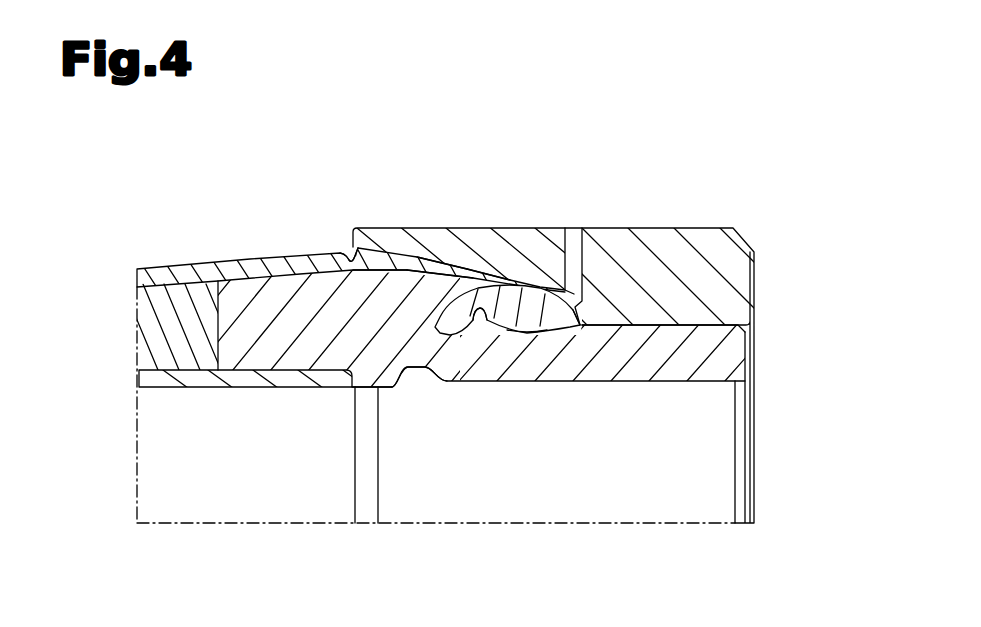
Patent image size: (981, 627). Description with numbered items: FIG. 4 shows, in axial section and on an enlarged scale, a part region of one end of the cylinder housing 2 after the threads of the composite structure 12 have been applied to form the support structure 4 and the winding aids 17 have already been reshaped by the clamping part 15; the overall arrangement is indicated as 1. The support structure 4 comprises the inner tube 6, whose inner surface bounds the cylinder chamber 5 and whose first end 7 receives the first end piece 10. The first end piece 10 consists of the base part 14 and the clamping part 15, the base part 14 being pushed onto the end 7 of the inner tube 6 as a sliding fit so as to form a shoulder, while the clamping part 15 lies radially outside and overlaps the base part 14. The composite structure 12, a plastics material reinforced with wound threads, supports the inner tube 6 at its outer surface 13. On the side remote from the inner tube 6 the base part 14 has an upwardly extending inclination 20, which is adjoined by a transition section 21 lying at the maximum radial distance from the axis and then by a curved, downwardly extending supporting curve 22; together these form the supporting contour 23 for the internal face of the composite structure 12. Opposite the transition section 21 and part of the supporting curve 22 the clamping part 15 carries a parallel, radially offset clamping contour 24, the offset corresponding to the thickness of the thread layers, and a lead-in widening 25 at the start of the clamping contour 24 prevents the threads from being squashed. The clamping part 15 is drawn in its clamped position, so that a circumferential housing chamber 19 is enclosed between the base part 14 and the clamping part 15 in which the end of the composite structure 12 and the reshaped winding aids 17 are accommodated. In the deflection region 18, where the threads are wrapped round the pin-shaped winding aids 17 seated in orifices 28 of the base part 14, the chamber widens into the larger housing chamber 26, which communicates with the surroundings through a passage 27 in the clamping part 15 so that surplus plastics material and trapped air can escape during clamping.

The bearing arrangement 1 is at (722, 101).
The cylinder housing 2 is at (300, 185).
The support structure 4 is at (453, 446).
The cylinder chamber 5 is at (190, 475).
The inner tube 6 is at (150, 382).
The first end 7 is at (338, 381).
The first end piece 10 is at (745, 202).
The composite structure 12 is at (168, 277).
The outer surface 13 is at (179, 365).
The base part 14 is at (258, 293).
The clamping part 15 is at (683, 244).
The winding aids 17 is at (535, 305).
The deflection region 18 is at (533, 345).
The housing chamber 19 is at (464, 262).
The inclination 20 is at (303, 272).
The transition section 21 is at (382, 262).
The supporting curve 22 is at (420, 265).
The supporting contour 23 is at (420, 265).
The clamping contour 24 is at (440, 266).
The lead-in widening 25 is at (349, 258).
The housing chamber 26 is at (570, 323).
The passage 27 is at (572, 243).
The orifice 28 is at (481, 311).